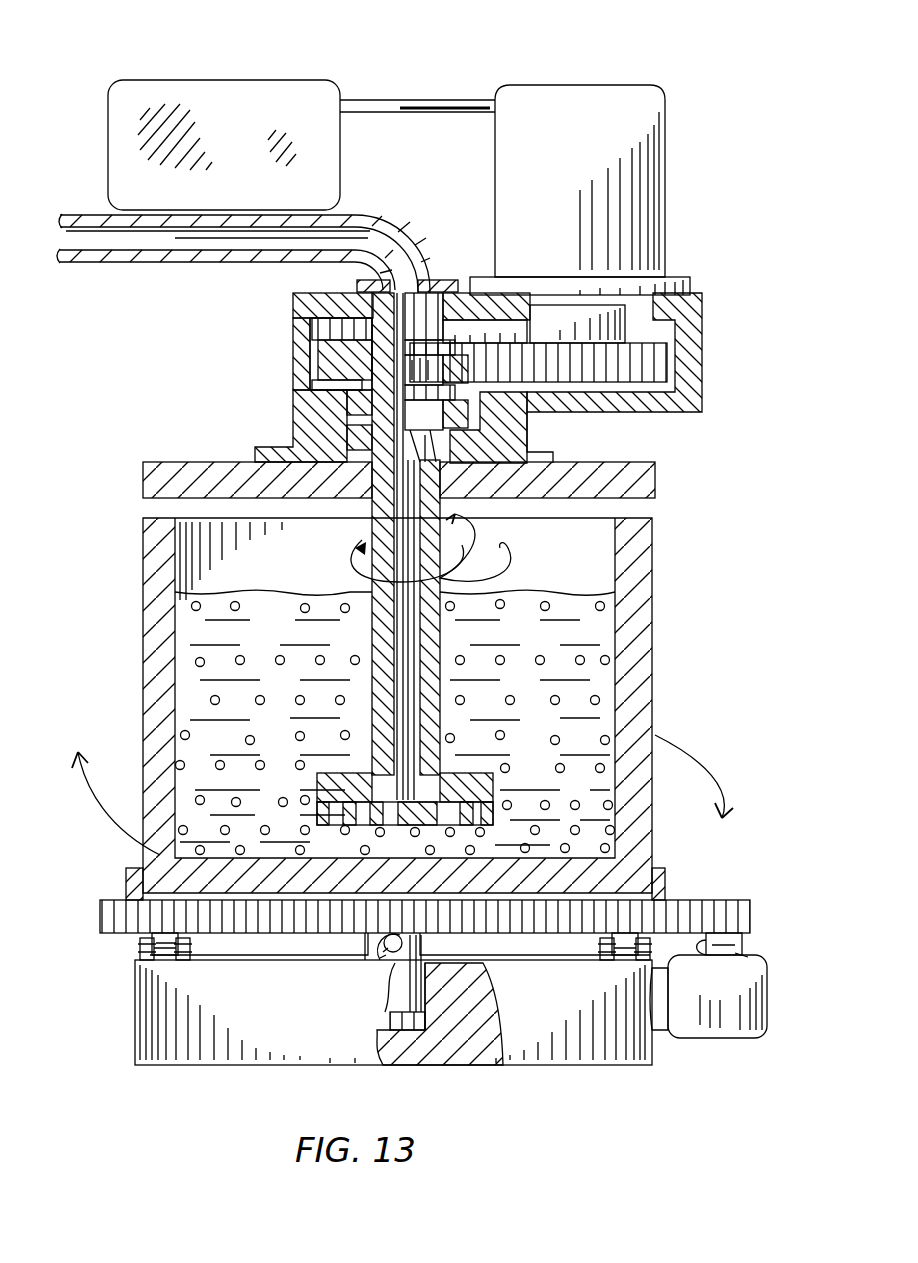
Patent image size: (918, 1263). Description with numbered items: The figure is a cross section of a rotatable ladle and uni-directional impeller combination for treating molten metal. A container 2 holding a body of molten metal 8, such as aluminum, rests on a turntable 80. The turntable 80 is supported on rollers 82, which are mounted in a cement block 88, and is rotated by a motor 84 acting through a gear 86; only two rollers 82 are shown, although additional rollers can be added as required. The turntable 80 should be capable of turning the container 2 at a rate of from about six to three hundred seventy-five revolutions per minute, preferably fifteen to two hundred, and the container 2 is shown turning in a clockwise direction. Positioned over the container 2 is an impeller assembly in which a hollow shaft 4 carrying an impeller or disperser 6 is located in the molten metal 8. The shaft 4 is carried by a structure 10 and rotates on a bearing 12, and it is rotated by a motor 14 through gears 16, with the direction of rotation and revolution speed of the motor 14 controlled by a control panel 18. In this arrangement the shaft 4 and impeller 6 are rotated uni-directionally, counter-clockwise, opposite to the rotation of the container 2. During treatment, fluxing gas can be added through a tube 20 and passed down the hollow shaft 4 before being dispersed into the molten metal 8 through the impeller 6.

The container 2 is at (678, 680).
The hollow shaft 4 is at (431, 546).
The impeller 6 is at (476, 828).
The molten metal 8 is at (188, 752).
The structure 10 is at (625, 462).
The bearing 12 is at (348, 420).
The motor 14 is at (648, 88).
The gears 16 is at (312, 364).
The control panel 18 is at (297, 80).
The tube 20 is at (120, 262).
The turntable 80 is at (150, 934).
The rollers 82 is at (148, 956).
The motor 84 is at (732, 1040).
The gear 86 is at (722, 900).
The cement block 88 is at (262, 1048).